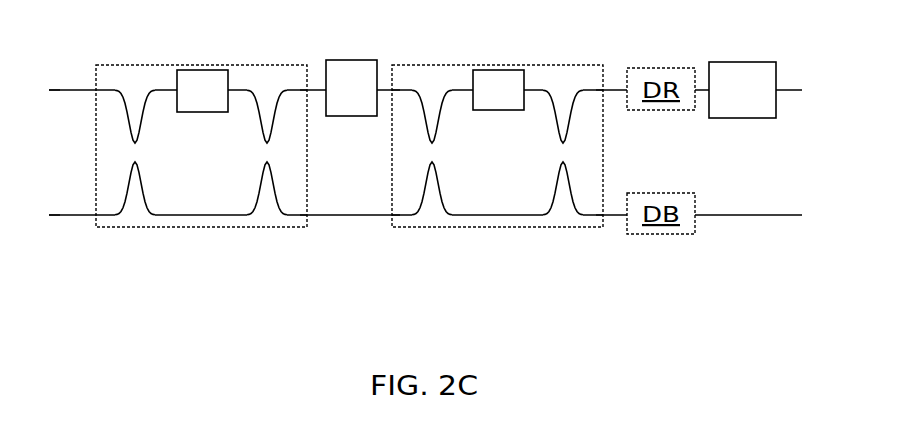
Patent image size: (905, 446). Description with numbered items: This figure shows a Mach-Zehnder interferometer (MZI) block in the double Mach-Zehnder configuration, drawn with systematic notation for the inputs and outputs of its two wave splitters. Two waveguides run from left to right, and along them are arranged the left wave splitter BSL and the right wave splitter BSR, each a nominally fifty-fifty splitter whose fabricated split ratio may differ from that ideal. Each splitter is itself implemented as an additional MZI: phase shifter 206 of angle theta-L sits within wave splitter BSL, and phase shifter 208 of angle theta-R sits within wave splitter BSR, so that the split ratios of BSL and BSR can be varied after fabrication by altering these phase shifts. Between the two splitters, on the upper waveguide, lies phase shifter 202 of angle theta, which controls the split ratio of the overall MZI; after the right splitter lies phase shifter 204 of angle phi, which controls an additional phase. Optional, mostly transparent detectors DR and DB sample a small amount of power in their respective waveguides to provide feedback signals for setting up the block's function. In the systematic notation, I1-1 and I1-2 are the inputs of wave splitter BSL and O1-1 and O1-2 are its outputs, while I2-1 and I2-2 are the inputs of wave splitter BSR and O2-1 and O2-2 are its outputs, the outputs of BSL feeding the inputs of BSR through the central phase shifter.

The phase shifter 202 is at (352, 60).
The phase shifter 204 is at (733, 62).
The phase shifter 206 is at (195, 70).
The phase shifter 208 is at (498, 70).
The left wave splitter BSL is at (153, 227).
The right wave splitter BSR is at (530, 227).
The first input of wave splitter BSL I1-1 is at (96, 89).
The second input of wave splitter BSL I1-2 is at (96, 215).
The first output of wave splitter BSL O1-1 is at (307, 89).
The second output of wave splitter BSL O1-2 is at (307, 215).
The first input of wave splitter BSR I2-1 is at (392, 90).
The second input of wave splitter BSR I2-2 is at (392, 215).
The first output of wave splitter BSR O2-1 is at (603, 89).
The second output of wave splitter BSR O2-2 is at (605, 217).